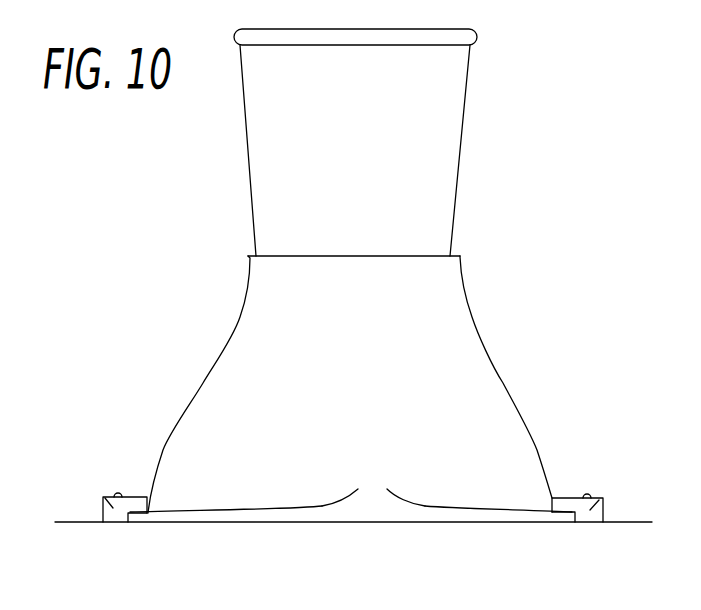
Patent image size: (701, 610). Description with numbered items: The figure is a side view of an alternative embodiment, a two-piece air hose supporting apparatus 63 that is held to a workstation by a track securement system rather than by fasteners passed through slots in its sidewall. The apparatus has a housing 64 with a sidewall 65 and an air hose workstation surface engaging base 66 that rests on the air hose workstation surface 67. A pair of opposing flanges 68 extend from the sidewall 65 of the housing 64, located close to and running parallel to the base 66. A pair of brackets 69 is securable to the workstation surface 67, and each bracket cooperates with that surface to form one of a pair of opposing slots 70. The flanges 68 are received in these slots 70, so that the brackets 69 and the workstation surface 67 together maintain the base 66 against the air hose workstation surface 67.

The two-piece air hose supporting apparatus 63 is at (512, 87).
The housing 64 is at (343, 384).
The sidewall 65 is at (467, 383).
The air hose workstation surface engaging base 66 is at (351, 524).
The air hose workstation surface 67 is at (80, 518).
The opposing flanges 68 is at (373, 483).
The brackets 69 is at (104, 497).
The opposing slots 70 is at (141, 522).